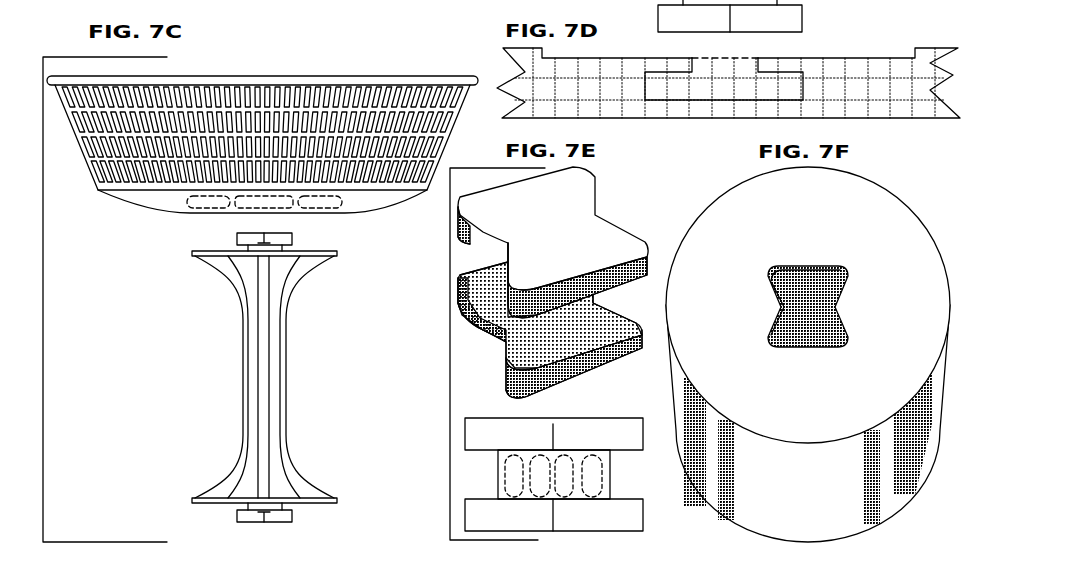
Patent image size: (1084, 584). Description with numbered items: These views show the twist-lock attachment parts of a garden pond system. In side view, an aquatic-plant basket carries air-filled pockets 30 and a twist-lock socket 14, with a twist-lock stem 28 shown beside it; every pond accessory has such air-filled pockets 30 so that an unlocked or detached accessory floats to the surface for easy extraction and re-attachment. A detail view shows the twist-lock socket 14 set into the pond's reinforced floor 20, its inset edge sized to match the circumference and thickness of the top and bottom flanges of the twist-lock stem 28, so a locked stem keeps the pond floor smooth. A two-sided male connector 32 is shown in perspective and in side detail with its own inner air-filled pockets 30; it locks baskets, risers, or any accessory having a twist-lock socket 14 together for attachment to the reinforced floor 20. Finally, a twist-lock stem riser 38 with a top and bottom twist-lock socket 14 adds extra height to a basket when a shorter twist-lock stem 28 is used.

In FIG. 7C, the twist-lock socket 14 is at (260, 203).
In FIG. 7D, the twist-lock socket 14 is at (735, 88).
In FIG. 7D, the reinforced floor 20 is at (858, 85).
In FIG. 7C, the twist-lock stem 28 is at (237, 375).
In FIG. 7C, the air-filled pockets 30 is at (210, 200).
In FIG. 7E, the air-filled pockets 30 is at (515, 472).
In FIG. 7E, the two-sided male connector 32 is at (545, 248).
In FIG. 7F, the twist-lock stem riser 38 is at (857, 230).